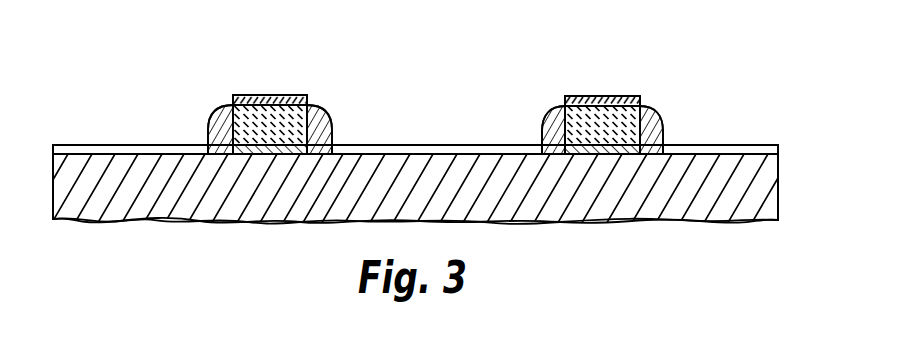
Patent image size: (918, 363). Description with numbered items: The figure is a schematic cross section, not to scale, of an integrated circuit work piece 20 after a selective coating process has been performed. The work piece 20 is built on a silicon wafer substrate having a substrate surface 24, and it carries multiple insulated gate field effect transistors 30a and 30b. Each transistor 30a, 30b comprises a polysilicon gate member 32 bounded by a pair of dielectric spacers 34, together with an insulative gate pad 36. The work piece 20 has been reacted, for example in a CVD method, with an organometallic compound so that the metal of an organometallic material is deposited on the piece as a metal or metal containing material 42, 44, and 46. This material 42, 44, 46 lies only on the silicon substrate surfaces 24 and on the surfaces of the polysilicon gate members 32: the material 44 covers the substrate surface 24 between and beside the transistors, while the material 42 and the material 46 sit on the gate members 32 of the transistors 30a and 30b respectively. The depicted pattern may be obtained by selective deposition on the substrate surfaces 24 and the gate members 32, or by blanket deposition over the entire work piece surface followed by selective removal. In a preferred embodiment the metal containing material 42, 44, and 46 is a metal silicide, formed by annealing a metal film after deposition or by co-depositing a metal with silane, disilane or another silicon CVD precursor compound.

The integrated circuit work piece 20 is at (150, 84).
The substrate surface 24 is at (417, 149).
The insulated gate field effect transistor 30a is at (273, 106).
The insulated gate field effect transistor 30b is at (611, 110).
The polysilicon gate member 32 is at (242, 100).
The dielectric spacer 34 is at (215, 115).
The insulative gate pad 36 is at (303, 107).
The metal containing material 42 is at (261, 97).
The metal containing material 44 is at (117, 144).
The metal containing material 46 is at (600, 100).